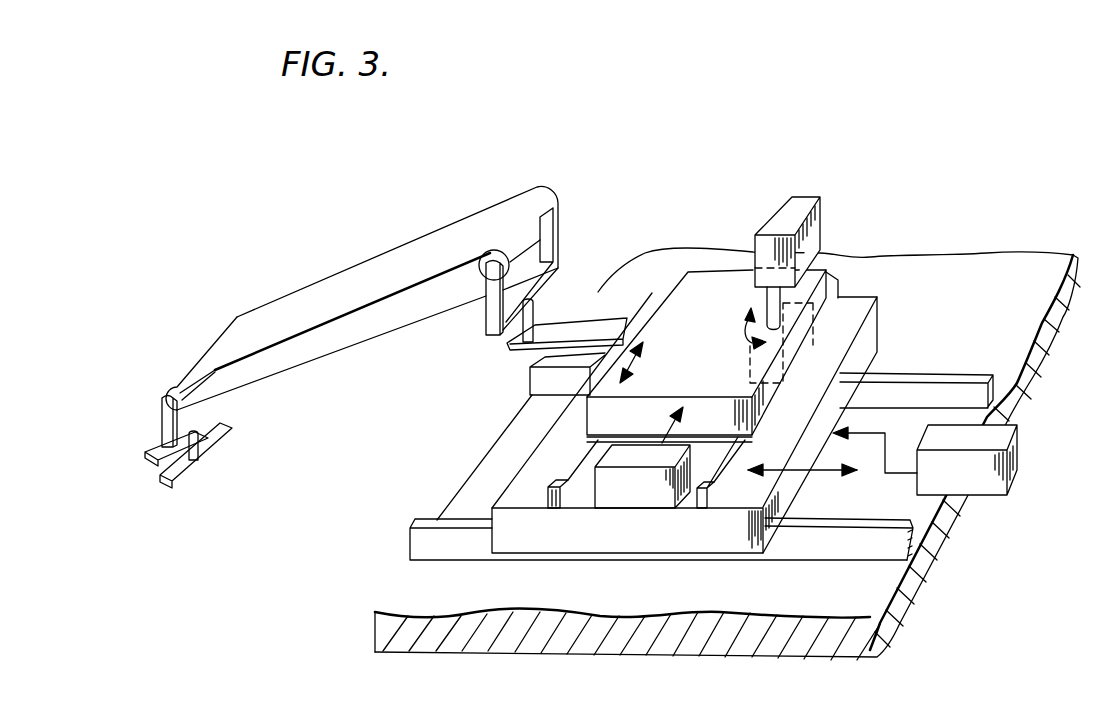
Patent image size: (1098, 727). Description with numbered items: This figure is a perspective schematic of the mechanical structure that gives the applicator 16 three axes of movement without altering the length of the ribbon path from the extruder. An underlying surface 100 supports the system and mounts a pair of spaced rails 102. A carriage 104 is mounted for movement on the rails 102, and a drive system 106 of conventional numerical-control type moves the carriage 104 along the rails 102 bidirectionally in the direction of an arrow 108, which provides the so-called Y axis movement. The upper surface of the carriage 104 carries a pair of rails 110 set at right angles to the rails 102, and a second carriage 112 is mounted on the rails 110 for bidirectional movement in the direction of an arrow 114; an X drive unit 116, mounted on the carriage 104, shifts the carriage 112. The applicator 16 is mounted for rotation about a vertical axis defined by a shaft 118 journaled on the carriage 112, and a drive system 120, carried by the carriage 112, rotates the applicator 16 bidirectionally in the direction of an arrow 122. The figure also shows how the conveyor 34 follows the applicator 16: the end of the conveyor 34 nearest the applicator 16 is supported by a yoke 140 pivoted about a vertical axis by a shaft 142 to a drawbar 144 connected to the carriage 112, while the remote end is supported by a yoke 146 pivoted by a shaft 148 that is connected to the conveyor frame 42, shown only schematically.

The applicator 16 is at (802, 203).
The conveyor 34 is at (384, 268).
The conveyor frame 42 is at (222, 437).
The underlying surface 100 is at (977, 270).
The rails 102 is at (930, 380).
The carriage 104 is at (858, 310).
The drive system 106 is at (1000, 435).
The arrow 108 is at (807, 472).
The rails 110 is at (697, 492).
The second carriage 112 is at (700, 277).
The arrow 114 is at (630, 366).
The X drive unit 116 is at (603, 462).
The shaft 118 is at (765, 298).
The drive system 120 is at (748, 356).
The arrow 122 is at (745, 325).
The yoke 140 is at (552, 237).
The shaft 142 is at (530, 317).
The drawbar 144 is at (540, 343).
The yoke 146 is at (160, 420).
The shaft 148 is at (196, 447).